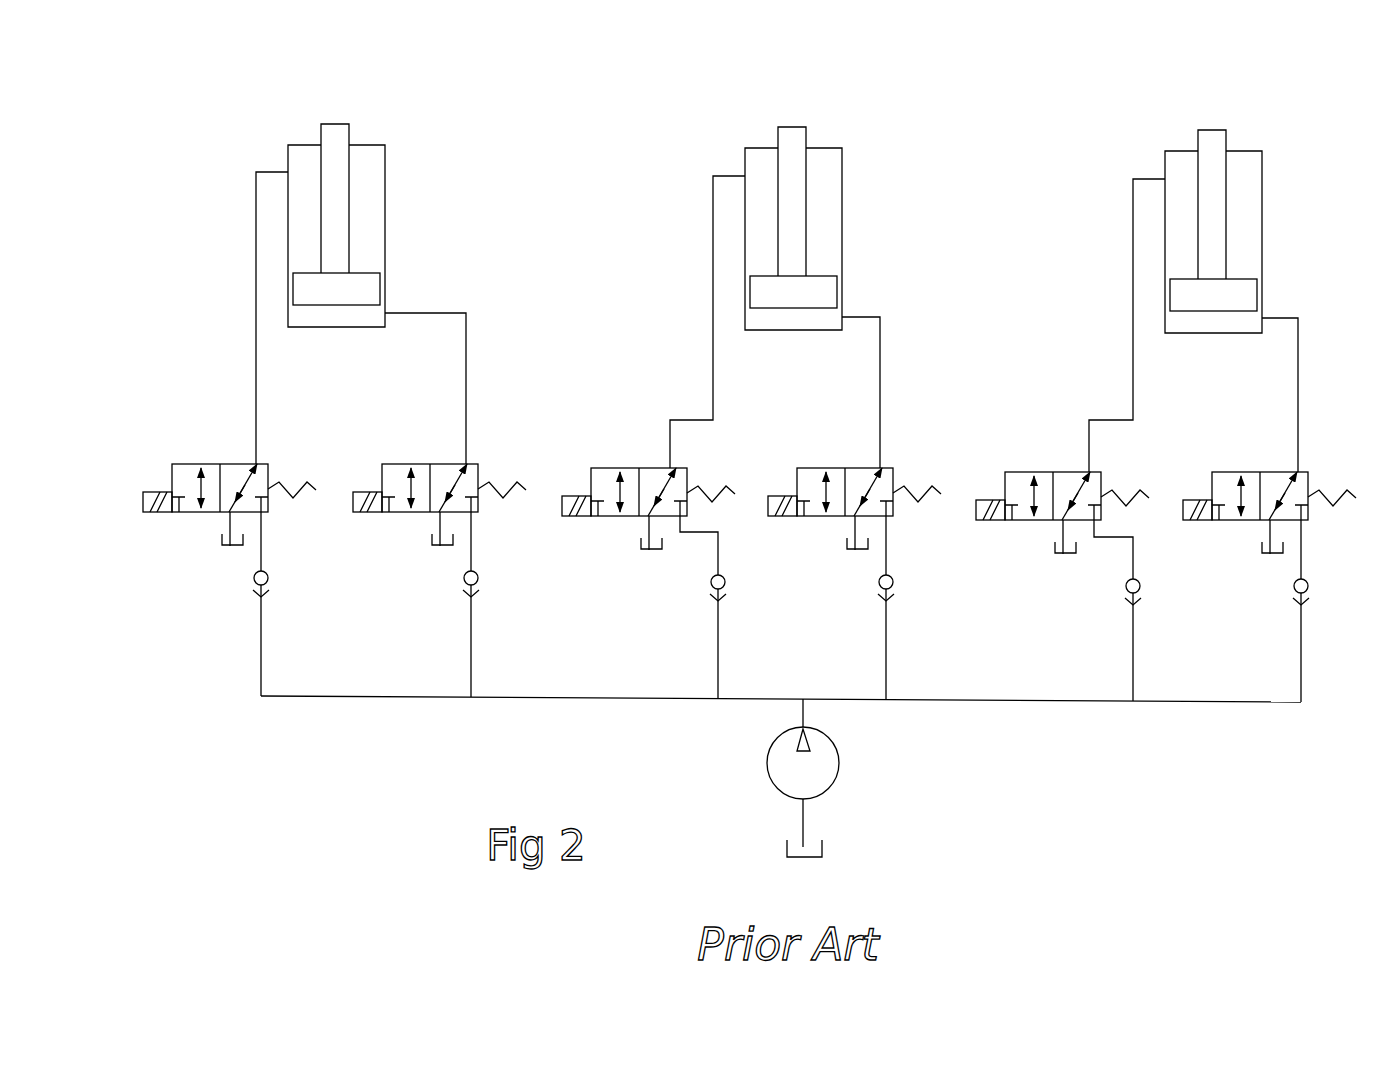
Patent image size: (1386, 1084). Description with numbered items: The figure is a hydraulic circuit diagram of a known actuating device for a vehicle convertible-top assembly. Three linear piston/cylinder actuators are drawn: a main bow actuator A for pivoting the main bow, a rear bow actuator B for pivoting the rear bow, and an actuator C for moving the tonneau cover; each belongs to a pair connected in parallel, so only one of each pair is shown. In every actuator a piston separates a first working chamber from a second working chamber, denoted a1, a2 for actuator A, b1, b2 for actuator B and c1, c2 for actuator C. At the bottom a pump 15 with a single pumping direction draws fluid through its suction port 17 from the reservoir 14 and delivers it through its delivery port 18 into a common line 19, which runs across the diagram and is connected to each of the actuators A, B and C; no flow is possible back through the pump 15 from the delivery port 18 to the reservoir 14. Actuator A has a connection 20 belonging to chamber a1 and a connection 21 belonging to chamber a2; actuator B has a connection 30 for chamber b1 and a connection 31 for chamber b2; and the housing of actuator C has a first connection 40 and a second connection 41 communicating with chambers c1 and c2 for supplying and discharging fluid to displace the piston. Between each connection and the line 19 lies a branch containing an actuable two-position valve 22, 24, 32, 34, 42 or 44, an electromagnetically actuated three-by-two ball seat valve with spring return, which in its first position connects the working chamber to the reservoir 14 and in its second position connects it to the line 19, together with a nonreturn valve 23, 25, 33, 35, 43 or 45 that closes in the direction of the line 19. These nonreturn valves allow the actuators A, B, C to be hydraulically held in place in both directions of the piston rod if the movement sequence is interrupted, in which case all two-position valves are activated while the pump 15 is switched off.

The main bow actuator A is at (405, 132).
The rear bow actuator B is at (849, 116).
The actuator C is at (1258, 124).
The connection 20 is at (286, 171).
The connection 21 is at (388, 313).
The first working chamber a1 is at (375, 203).
The second working chamber a2 is at (303, 321).
The two-position valve 22 is at (182, 442).
The nonreturn valve 23 is at (284, 576).
The two-position valve 24 is at (404, 452).
The nonreturn valve 25 is at (494, 594).
The connection 30 is at (743, 175).
The connection 31 is at (845, 318).
The first working chamber b1 is at (832, 207).
The second working chamber b2 is at (760, 324).
The two-position valve 32 is at (591, 444).
The nonreturn valve 33 is at (739, 593).
The two-position valve 34 is at (851, 456).
The nonreturn valve 35 is at (904, 593).
The first connection 40 is at (1163, 178).
The second connection 41 is at (1265, 318).
The first working chamber c1 is at (1252, 210).
The second working chamber c2 is at (1180, 327).
The two-position valve 42 is at (1007, 447).
The nonreturn valve 43 is at (1154, 598).
The two-position valve 44 is at (1264, 460).
The nonreturn valve 45 is at (1320, 598).
The reservoir 14 is at (230, 548).
The pump 15 is at (835, 783).
The suction port 17 is at (806, 801).
The delivery port 18 is at (806, 726).
The common line 19 is at (397, 699).